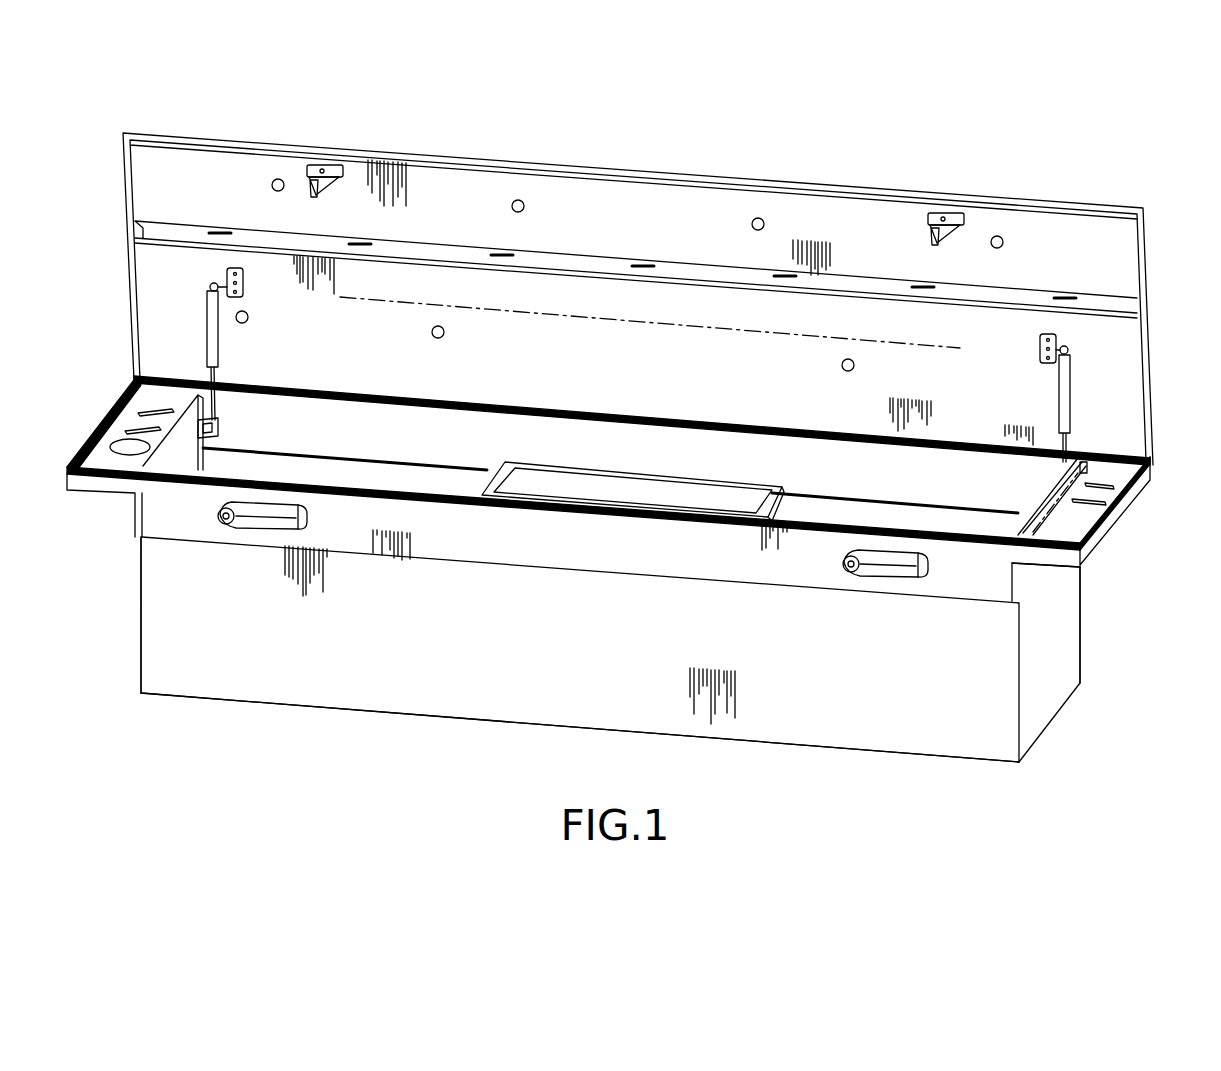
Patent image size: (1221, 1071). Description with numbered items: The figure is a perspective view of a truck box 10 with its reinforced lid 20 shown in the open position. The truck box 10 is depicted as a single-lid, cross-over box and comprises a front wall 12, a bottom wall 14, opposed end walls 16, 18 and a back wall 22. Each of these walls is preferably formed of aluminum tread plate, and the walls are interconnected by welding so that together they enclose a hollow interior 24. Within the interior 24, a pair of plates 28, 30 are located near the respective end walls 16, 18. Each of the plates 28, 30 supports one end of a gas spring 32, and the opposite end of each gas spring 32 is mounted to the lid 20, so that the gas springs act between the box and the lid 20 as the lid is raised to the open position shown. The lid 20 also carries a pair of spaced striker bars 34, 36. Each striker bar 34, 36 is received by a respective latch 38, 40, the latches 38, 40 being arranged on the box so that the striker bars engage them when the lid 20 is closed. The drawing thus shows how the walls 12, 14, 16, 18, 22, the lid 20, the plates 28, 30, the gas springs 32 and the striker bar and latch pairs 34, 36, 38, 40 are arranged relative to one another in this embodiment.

The truck box 10 is at (918, 156).
The front wall 12 is at (345, 680).
The bottom wall 14 is at (497, 722).
The end wall 16 is at (138, 580).
The end wall 18 is at (1040, 708).
The reinforced lid 20 is at (717, 178).
The back wall 22 is at (1080, 612).
The hollow interior 24 is at (878, 467).
The plate 28 is at (177, 448).
The plate 30 is at (1045, 512).
The gas spring 32 is at (207, 332).
The striker bar 34 is at (326, 177).
The striker bar 36 is at (952, 227).
The latch 38 is at (218, 514).
The latch 40 is at (877, 572).